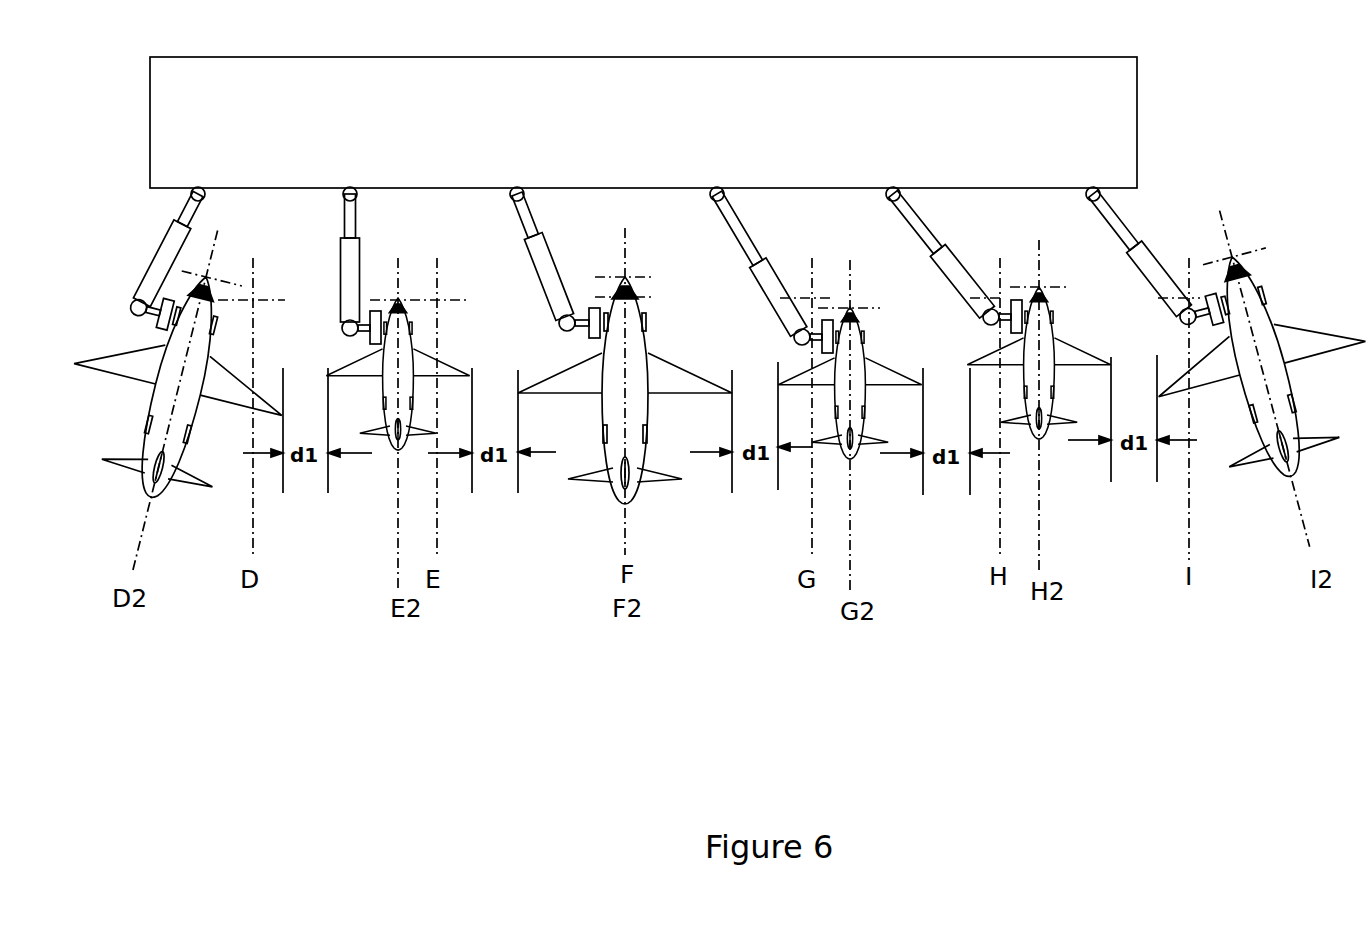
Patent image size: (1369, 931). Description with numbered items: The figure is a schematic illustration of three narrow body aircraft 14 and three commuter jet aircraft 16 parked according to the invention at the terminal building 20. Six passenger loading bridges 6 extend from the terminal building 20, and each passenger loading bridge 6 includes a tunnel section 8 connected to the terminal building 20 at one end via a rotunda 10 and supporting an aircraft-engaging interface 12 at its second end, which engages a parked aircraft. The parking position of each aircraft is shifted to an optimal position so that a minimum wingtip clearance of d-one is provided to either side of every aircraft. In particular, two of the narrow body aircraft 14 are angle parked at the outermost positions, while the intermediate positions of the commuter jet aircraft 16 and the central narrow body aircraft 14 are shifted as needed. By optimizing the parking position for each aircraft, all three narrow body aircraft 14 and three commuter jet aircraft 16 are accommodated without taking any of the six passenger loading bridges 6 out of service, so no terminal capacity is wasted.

The passenger loading bridge 6 is at (174, 402).
The tunnel section 8 is at (165, 248).
The rotunda 10 is at (192, 194).
The aircraft-engaging interface 12 is at (153, 318).
The narrow body aircraft 14 is at (145, 483).
The commuter jet aircraft 16 is at (393, 440).
The terminal building 20 is at (1137, 135).